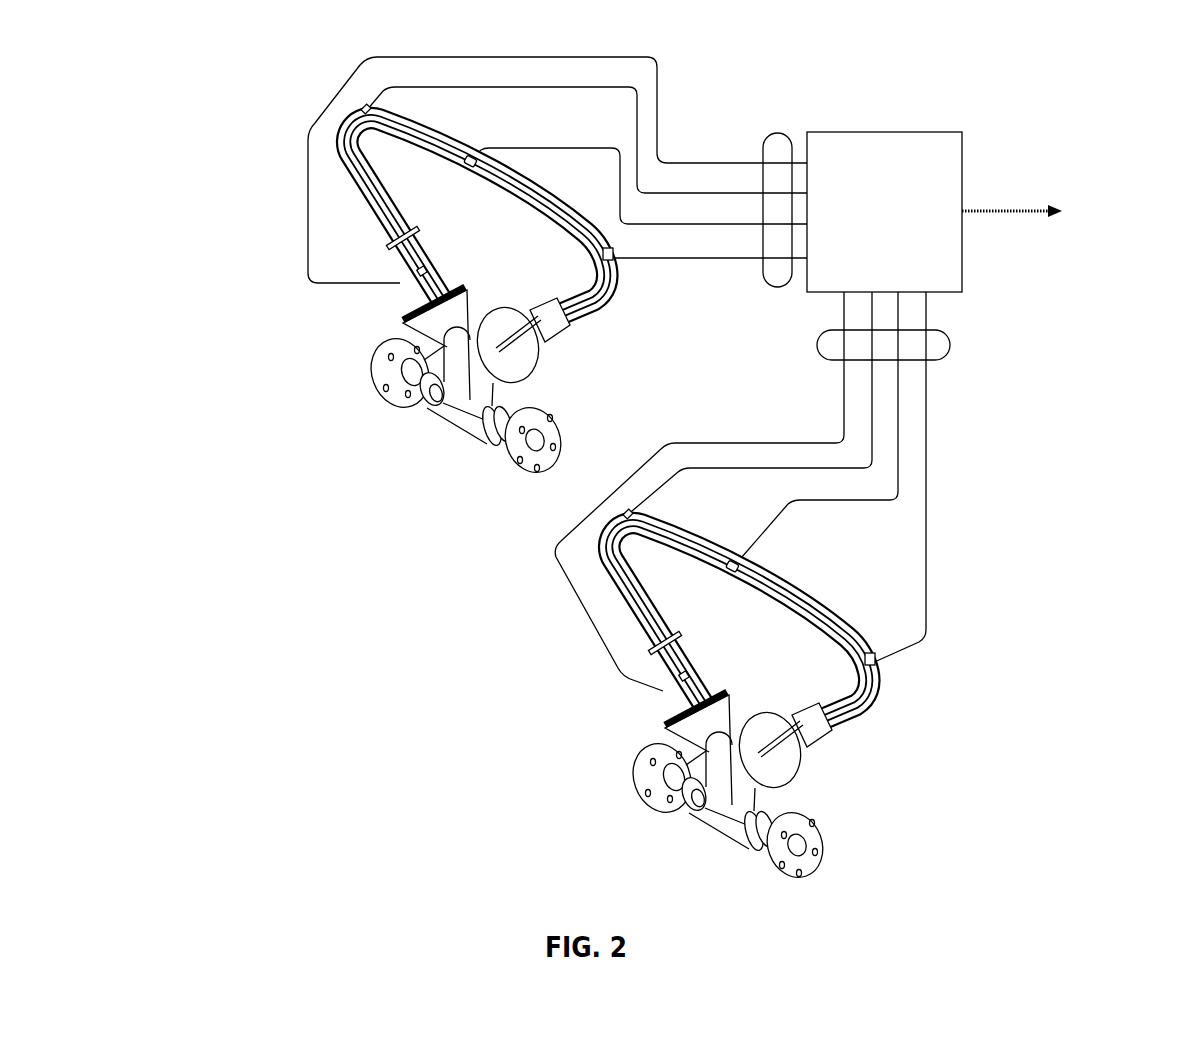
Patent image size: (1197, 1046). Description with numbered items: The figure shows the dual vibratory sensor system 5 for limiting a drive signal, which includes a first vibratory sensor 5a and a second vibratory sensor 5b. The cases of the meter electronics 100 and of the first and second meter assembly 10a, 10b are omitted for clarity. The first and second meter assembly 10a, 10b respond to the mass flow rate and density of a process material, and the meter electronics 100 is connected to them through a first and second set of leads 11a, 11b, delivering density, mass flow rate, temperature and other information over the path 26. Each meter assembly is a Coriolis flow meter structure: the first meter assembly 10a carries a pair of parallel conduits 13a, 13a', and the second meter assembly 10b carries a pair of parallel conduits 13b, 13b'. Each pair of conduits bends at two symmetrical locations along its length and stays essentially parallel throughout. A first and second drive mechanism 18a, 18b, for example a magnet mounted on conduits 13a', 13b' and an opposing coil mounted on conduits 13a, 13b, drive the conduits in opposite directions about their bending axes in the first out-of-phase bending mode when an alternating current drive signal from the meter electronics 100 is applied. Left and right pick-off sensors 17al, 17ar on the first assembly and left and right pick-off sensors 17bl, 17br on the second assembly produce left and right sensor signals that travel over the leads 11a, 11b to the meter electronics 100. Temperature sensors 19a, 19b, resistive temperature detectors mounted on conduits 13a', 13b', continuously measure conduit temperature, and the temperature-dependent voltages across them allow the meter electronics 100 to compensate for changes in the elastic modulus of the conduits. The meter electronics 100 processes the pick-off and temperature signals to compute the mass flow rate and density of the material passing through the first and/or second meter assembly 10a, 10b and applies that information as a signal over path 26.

The dual vibratory sensor system 5 is at (1096, 102).
The first vibratory sensor 5a is at (990, 766).
The second vibratory sensor 5b is at (226, 74).
The first meter assembly 10a is at (872, 852).
The second meter assembly 10b is at (326, 349).
The first set of leads 11a is at (950, 346).
The second set of leads 11b is at (778, 132).
The conduit 13a is at (688, 621).
The conduit 13a' is at (739, 635).
The conduit 13b is at (425, 216).
The conduit 13b' is at (484, 239).
The left pick-off sensor 17al is at (605, 480).
The right pick-off sensor 17ar is at (925, 676).
The left pick-off sensor 17bl is at (365, 108).
The right pick-off sensor 17br is at (622, 266).
The first drive mechanism 18a is at (718, 534).
The second drive mechanism 18b is at (470, 158).
The temperature sensor 19a is at (691, 651).
The temperature sensor 19b is at (422, 272).
The path 26 is at (1015, 210).
The meter electronics 100 is at (864, 259).